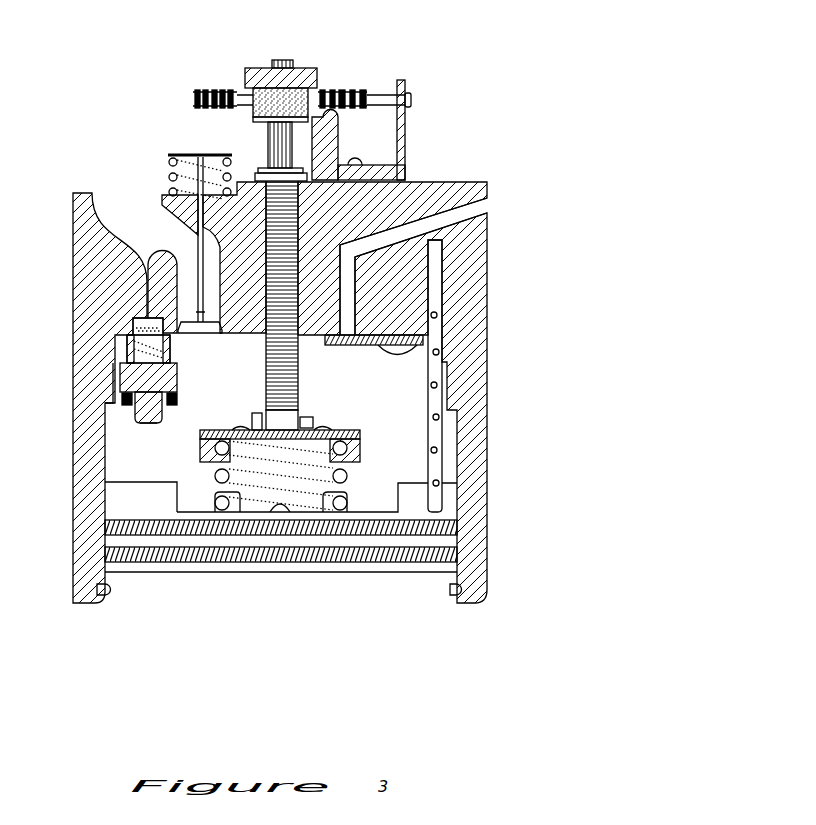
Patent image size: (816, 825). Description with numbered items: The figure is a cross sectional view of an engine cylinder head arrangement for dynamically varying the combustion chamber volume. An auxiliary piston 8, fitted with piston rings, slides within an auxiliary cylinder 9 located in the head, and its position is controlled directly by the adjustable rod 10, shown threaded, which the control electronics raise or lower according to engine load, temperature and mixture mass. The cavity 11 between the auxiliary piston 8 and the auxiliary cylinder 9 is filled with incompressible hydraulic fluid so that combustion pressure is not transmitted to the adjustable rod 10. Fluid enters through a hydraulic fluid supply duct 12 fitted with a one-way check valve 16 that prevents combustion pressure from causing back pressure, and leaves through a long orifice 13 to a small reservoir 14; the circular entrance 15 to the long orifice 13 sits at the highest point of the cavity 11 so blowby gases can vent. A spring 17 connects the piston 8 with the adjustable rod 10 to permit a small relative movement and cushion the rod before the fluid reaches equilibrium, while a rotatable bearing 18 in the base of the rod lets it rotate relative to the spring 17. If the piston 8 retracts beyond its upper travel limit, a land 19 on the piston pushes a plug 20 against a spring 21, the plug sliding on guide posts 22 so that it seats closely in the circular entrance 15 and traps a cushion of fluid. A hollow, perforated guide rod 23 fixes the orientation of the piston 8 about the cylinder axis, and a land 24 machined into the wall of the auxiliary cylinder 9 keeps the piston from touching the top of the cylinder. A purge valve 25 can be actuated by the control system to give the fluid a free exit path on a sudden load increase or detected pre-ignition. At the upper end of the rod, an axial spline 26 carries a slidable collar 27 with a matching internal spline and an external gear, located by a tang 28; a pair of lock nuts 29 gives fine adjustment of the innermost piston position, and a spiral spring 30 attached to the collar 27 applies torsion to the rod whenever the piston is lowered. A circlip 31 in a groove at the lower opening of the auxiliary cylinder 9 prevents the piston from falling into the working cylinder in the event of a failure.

The auxiliary piston 8 is at (240, 573).
The auxiliary cylinder 9 is at (489, 478).
The adjustable rod 10 is at (299, 353).
The cavity 11 is at (317, 458).
The hydraulic fluid supply duct 12 is at (430, 266).
The long orifice 13 is at (146, 292).
The small reservoir 14 is at (110, 398).
The circular entrance 15 is at (133, 327).
The one-way check valve 16 is at (355, 346).
The spring 17 is at (281, 476).
The rotatable bearing 18 is at (254, 420).
The land 19 is at (160, 482).
The plug 20 is at (165, 425).
The spring 21 is at (120, 372).
The guide posts 22 is at (127, 345).
The hollow, perforated guide rod 23 is at (430, 450).
The land 24 is at (97, 428).
The purge valve 25 is at (200, 257).
The spline 26 is at (268, 133).
The collar 27 is at (305, 92).
The tang 28 is at (334, 133).
The lock nuts 29 is at (258, 168).
The spiral spring 30 is at (368, 92).
The circlip 31 is at (110, 592).